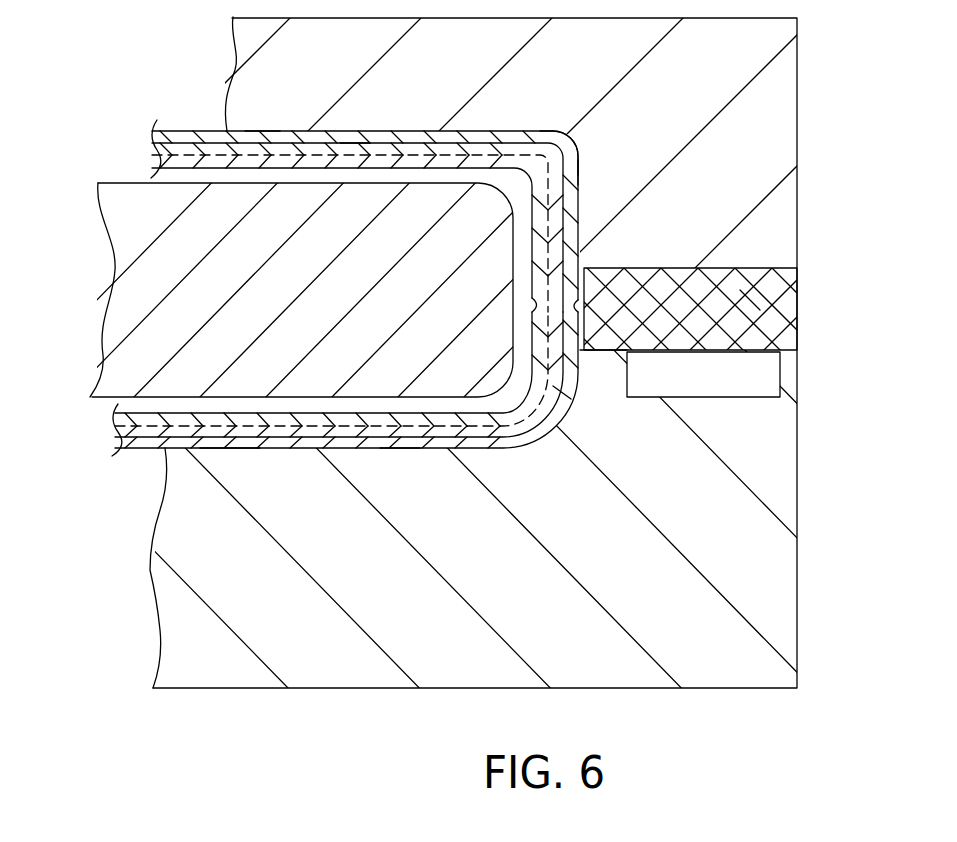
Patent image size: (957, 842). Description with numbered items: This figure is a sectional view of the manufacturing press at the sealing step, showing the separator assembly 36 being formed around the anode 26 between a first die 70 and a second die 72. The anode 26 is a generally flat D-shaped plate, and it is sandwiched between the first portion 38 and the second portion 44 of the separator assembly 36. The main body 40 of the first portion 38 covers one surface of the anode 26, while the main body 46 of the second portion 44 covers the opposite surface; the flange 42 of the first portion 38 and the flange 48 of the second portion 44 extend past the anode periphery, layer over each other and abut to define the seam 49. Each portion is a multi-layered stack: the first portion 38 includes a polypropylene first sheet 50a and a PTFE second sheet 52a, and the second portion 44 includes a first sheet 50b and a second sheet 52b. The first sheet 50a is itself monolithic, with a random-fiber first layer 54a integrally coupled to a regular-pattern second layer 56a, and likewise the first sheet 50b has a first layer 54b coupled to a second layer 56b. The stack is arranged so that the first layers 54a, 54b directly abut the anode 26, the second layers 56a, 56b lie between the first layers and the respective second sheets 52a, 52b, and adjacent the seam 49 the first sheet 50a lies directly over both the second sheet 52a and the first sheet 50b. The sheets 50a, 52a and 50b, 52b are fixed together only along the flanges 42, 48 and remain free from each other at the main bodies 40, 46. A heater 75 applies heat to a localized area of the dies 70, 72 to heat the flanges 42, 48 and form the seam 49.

The anode 26 is at (123, 245).
The separator assembly 36 is at (538, 115).
The first portion 38 is at (226, 465).
The main body 40 is at (394, 446).
The flange 42 is at (595, 350).
The second portion 44 is at (262, 130).
The main body 46 is at (353, 147).
The flange 48 is at (733, 298).
The seam 49 is at (578, 173).
The first sheet 50a is at (318, 413).
The first sheet 50b is at (332, 181).
The second sheet 52a is at (158, 444).
The second sheet 52b is at (196, 136).
The first layer 54a is at (180, 421).
The first layer 54b is at (257, 163).
The second layer 56a is at (293, 433).
The second layer 56b is at (380, 157).
The first die 70 is at (758, 563).
The second die 72 is at (766, 128).
The heater 75 is at (740, 398).